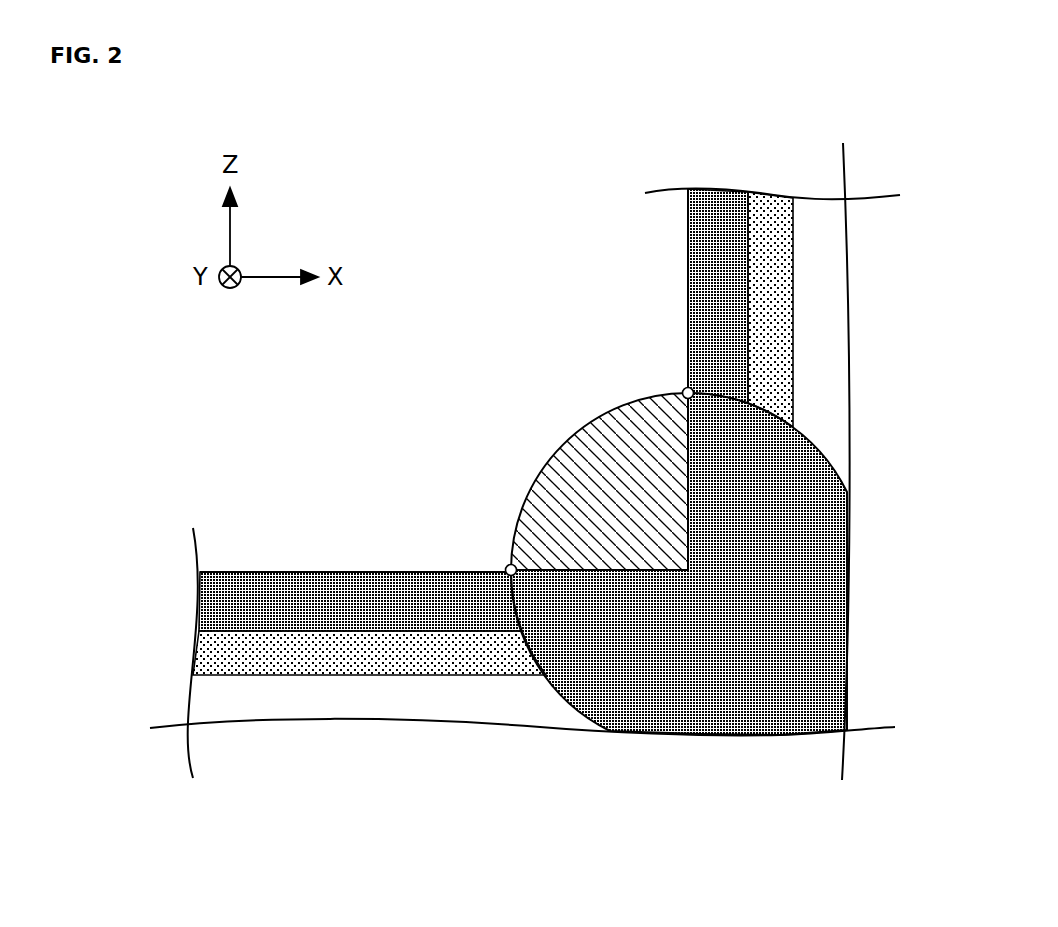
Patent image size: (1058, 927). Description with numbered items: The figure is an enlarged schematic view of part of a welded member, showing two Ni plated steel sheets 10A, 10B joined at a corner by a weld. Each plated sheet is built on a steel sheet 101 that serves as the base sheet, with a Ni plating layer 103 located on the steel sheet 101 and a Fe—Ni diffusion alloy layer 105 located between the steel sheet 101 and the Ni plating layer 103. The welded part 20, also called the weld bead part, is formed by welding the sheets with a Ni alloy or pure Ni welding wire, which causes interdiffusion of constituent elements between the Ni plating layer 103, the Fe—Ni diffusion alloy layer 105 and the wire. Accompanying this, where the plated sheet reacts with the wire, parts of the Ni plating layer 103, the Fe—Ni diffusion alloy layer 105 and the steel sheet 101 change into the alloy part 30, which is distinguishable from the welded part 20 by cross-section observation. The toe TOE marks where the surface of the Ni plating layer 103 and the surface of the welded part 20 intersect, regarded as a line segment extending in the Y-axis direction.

The steel sheet 101 is at (807, 335).
The Ni plating layer 103 is at (217, 600).
The Fe—Ni diffusion alloy layer 105 is at (215, 658).
The Ni plated steel sheet 10A is at (363, 557).
The Ni plated steel sheet 10B is at (660, 232).
The welded part 20 is at (597, 433).
The alloy part 30 is at (720, 722).
The toe TOE is at (682, 390).